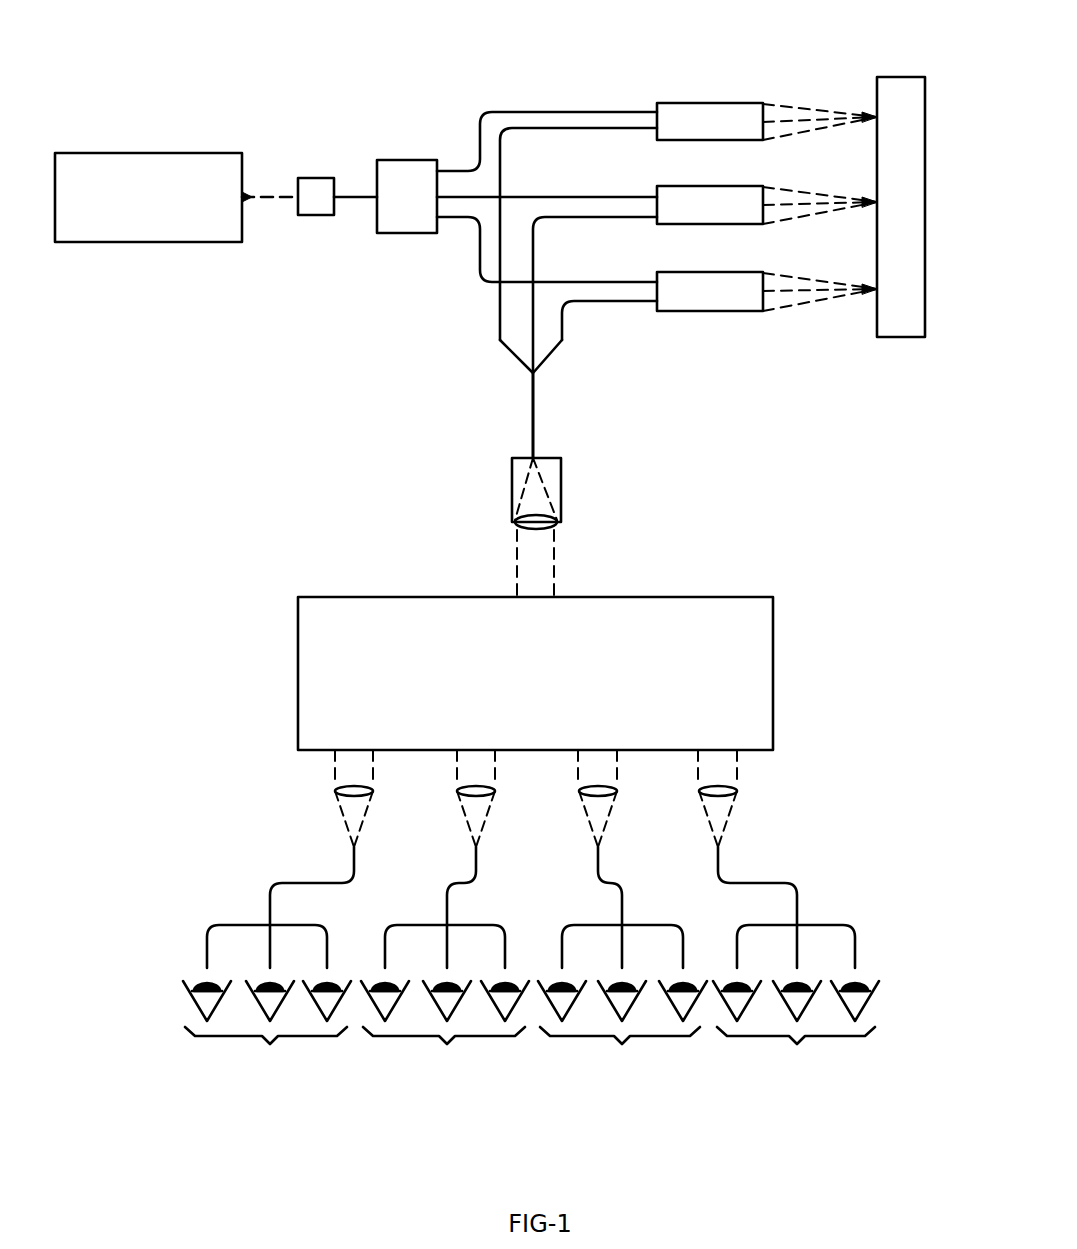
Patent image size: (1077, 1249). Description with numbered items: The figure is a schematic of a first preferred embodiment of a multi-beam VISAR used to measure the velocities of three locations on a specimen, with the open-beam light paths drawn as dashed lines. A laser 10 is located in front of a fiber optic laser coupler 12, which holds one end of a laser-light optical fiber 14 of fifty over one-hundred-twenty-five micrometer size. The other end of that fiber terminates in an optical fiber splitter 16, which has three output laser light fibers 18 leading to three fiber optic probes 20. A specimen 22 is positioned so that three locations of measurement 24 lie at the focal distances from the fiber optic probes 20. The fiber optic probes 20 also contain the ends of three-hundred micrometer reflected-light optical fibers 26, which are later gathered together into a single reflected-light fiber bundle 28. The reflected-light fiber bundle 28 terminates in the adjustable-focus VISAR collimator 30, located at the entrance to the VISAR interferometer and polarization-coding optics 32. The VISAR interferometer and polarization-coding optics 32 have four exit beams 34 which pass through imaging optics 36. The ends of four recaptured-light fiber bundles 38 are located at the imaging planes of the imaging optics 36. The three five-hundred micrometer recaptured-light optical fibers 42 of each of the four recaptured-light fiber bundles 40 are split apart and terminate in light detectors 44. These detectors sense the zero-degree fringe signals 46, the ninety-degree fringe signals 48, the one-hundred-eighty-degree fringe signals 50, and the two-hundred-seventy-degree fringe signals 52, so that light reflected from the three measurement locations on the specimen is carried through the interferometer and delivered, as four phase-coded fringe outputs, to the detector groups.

The laser 10 is at (150, 153).
The fiber optic laser coupler 12 is at (315, 178).
The laser-light optical fiber 14 is at (357, 193).
The optical fiber splitter 16 is at (407, 160).
The output laser light fibers 18 is at (555, 112).
The fiber optic probes 20 is at (707, 103).
The specimen 22 is at (902, 78).
The locations of measurement 24 is at (873, 291).
The reflected-light optical fibers 26 is at (498, 318).
The reflected-light fiber bundle 28 is at (532, 407).
The adjustable-focus VISAR collimator 30 is at (512, 497).
The VISAR interferometer and polarization-coding optics 32 is at (310, 691).
The exit beams 34 is at (336, 772).
The imaging optics 36 is at (738, 791).
The recaptured-light fiber bundles 38 is at (350, 848).
The recaptured-light fiber bundles 40 is at (797, 895).
The recaptured-light optical fibers 42 is at (207, 945).
The light detectors 44 is at (200, 1003).
The 0° fringe signals 46 is at (270, 1044).
The 90° fringe signals 48 is at (447, 1044).
The 180° fringe signals 50 is at (622, 1044).
The 270° fringe signals 52 is at (797, 1044).